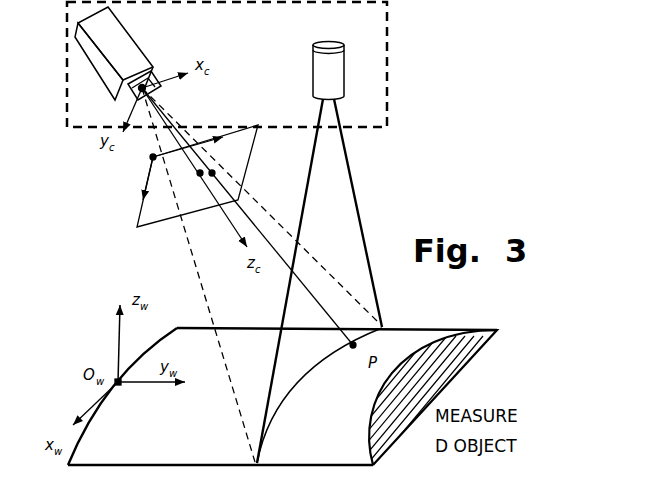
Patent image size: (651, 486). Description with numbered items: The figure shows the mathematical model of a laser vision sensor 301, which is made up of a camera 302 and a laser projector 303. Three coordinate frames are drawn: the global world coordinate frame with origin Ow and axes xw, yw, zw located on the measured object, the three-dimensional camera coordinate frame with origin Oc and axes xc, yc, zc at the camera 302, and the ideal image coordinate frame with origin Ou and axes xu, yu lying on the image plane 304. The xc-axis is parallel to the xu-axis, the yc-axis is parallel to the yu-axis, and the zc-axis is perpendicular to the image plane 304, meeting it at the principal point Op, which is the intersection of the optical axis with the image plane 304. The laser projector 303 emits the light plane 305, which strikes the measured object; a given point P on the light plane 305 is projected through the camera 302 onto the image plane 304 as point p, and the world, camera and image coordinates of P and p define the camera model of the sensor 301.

The laser vision sensor 301 is at (387, 28).
The camera 302 is at (94, 56).
The laser projector 303 is at (344, 64).
The image plane 304 is at (153, 178).
The light plane 305 is at (355, 187).